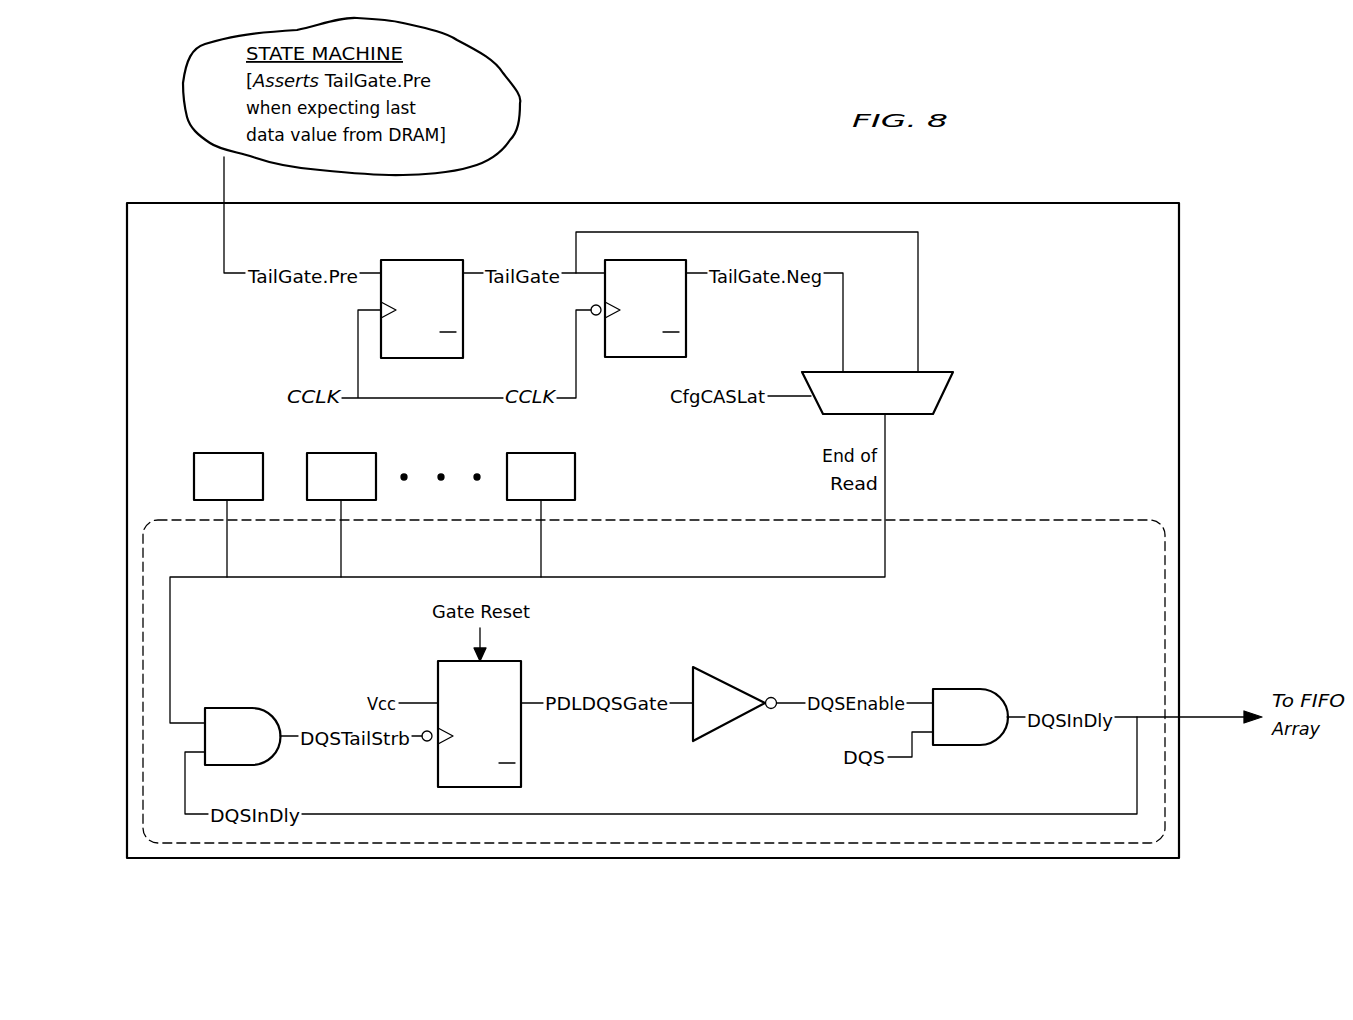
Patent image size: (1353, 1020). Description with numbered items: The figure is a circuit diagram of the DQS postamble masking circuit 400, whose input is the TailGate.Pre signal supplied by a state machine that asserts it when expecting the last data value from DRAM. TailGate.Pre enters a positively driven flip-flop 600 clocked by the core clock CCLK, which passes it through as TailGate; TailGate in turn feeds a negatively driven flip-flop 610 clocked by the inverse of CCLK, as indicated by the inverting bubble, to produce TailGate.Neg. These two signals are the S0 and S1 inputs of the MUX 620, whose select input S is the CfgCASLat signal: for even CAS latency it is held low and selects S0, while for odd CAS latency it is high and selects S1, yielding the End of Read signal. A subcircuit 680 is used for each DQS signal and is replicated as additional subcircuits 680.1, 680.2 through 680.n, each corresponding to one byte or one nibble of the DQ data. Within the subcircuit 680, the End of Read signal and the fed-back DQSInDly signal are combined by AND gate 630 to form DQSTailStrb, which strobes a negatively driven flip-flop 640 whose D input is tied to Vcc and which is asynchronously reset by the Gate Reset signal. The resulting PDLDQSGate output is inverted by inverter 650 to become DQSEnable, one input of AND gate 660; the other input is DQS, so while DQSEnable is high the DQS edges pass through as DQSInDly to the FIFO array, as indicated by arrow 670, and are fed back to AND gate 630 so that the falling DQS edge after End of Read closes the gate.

The DQS postamble masking circuit 400 is at (653, 530).
The positively driven flip-flop 600 is at (463, 322).
The negatively driven flip-flop 610 is at (686, 312).
The MUX 620 is at (930, 372).
The AND gate 630 is at (222, 707).
The negatively driven flip-flop 640 is at (515, 661).
The inverter 650 is at (710, 667).
The AND gate 660 is at (968, 689).
The arrow 670 is at (1197, 720).
The subcircuit 680 is at (654, 681).
The subcircuit 680.1 is at (228, 515).
The subcircuit 680.2 is at (341, 515).
The subcircuit 680.n is at (541, 515).